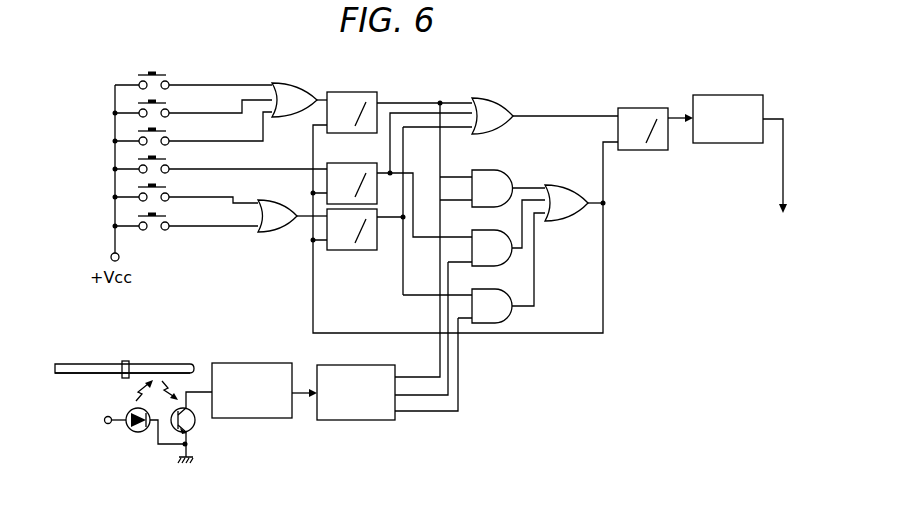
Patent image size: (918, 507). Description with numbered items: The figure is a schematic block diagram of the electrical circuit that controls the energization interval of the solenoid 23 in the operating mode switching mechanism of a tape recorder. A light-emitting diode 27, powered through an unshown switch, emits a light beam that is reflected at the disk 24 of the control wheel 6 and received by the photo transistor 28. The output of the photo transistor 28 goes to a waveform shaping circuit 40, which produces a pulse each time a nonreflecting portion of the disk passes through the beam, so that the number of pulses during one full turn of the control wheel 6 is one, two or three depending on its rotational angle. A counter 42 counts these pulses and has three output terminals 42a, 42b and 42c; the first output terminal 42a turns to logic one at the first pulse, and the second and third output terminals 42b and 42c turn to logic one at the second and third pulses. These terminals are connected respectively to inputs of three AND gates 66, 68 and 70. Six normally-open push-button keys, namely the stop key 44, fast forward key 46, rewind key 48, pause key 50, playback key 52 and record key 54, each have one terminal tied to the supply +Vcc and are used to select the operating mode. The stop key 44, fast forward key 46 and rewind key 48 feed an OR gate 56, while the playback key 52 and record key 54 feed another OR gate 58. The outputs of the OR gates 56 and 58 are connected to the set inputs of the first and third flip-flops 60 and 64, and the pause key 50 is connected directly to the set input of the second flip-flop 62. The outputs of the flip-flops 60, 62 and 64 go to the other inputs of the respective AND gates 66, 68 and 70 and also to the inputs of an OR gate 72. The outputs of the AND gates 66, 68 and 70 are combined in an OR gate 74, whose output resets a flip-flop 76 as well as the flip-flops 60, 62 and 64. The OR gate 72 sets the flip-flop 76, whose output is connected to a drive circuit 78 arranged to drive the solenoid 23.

The control wheel 6 is at (151, 363).
The solenoid 23 is at (752, 201).
The disk 24 is at (184, 375).
The light-emitting diode 27 is at (139, 433).
The photo transistor 28 is at (197, 429).
The waveform shaping circuit 40 is at (252, 363).
The counter 42 is at (387, 261).
The first output terminal 42a is at (402, 244).
The second output terminal 42b is at (406, 332).
The third output terminal 42c is at (348, 365).
The stop key 44 is at (168, 74).
The fast forward key 46 is at (168, 102).
The rewind key 48 is at (168, 130).
The pause key 50 is at (168, 158).
The playback key 52 is at (168, 186).
The record key 54 is at (168, 215).
The OR gate 56 is at (297, 83).
The OR gate 58 is at (268, 232).
The first flip-flop 60 is at (350, 92).
The second flip-flop 62 is at (348, 163).
The third flip-flop 64 is at (343, 250).
The AND gate 66 is at (507, 171).
The AND gate 68 is at (497, 266).
The AND gate 70 is at (490, 323).
The OR gate 72 is at (506, 98).
The OR gate 74 is at (565, 185).
The flip-flop 76 is at (640, 108).
The drive circuit 78 is at (720, 95).